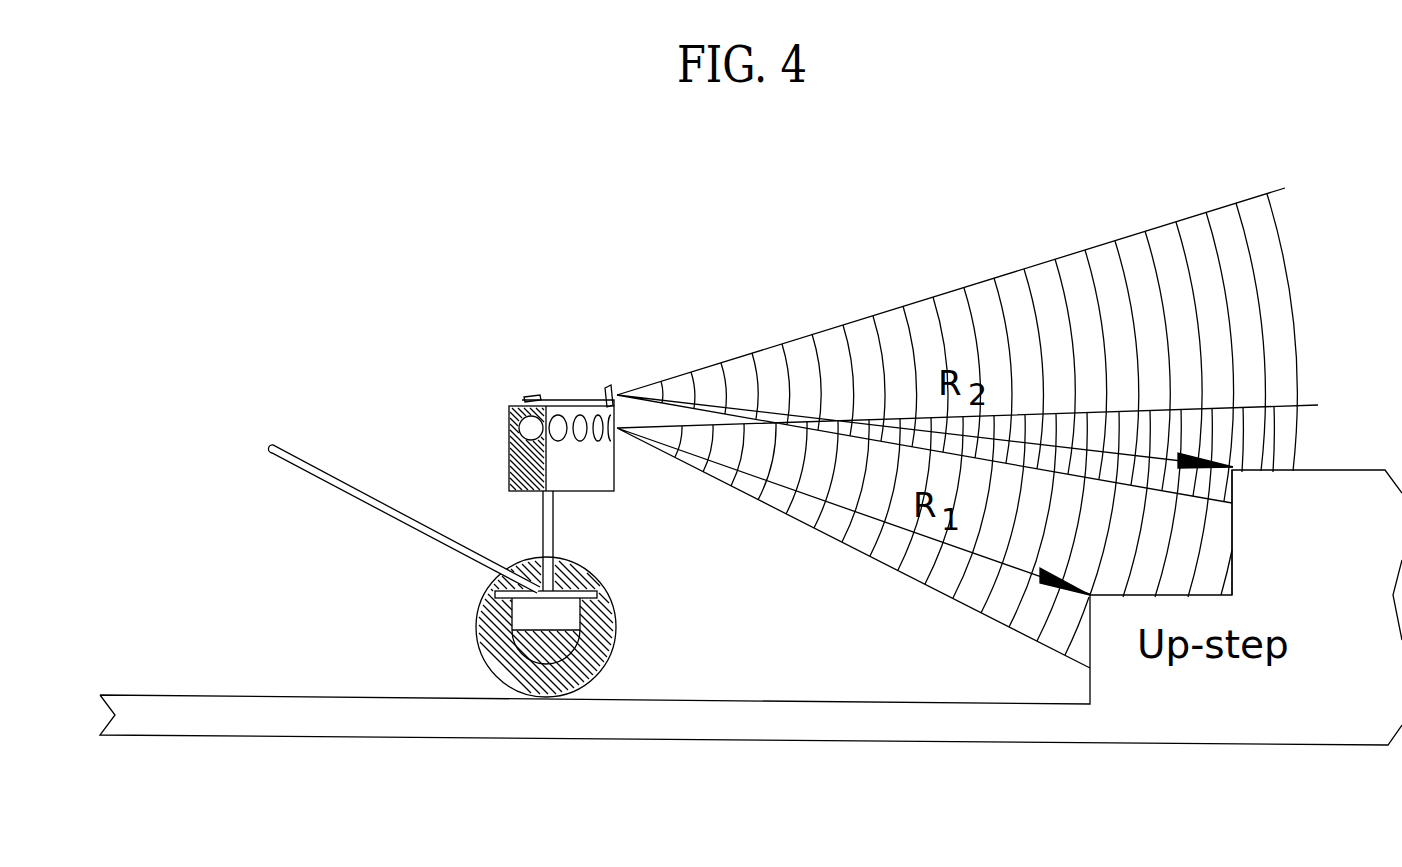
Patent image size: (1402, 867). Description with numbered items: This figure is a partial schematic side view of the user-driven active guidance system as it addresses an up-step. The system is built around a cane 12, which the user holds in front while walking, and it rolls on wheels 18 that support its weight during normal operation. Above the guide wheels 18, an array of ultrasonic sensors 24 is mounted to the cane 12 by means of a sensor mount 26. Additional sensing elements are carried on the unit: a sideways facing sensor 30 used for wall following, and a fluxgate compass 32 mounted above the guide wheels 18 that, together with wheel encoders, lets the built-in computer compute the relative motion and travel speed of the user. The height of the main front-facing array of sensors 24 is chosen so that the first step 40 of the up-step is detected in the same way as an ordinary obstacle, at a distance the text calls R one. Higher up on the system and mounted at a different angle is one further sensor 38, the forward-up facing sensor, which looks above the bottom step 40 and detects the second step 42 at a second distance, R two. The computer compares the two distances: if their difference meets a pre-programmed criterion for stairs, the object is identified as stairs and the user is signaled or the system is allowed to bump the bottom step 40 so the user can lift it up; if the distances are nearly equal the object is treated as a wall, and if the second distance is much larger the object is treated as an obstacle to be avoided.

The cane 12 is at (297, 467).
The wheels 18 is at (480, 596).
The ultrasonic sensors 24 is at (606, 410).
The sensor mount 26 is at (551, 531).
The sideways facing sensor 30 is at (526, 427).
The fluxgate compass 32 is at (528, 397).
The forward-up facing sensor 38 is at (613, 390).
The first step 40 is at (1088, 675).
The second step 42 is at (1233, 540).